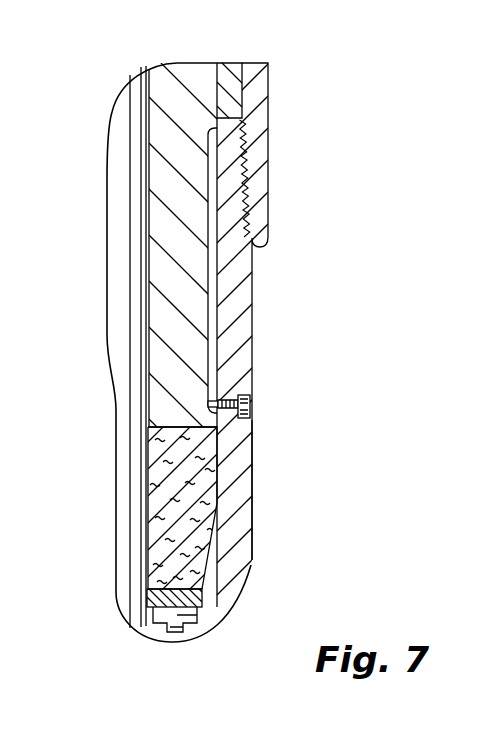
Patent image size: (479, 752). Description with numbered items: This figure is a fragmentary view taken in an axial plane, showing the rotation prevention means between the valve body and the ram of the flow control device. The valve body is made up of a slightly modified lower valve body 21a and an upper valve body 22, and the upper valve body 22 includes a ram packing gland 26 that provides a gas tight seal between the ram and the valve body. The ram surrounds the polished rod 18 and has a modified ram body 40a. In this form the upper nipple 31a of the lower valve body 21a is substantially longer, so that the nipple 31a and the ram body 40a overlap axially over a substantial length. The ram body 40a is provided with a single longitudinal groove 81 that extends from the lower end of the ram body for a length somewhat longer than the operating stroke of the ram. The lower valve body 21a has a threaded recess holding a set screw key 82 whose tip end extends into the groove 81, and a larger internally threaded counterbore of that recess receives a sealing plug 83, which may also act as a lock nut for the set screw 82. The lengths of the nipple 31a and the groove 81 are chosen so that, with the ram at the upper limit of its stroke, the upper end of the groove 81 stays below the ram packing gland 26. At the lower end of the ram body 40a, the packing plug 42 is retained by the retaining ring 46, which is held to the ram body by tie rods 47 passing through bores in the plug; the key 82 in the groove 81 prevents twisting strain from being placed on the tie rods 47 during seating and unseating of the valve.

The polished rod 18 is at (119, 268).
The ram body 40a is at (188, 72).
The ram packing gland 26 is at (238, 52).
The upper valve body 22 is at (278, 90).
The upper nipple 31a is at (243, 277).
The longitudinal groove 81 is at (212, 343).
The set screw key 82 is at (224, 402).
The sealing plug 83 is at (250, 404).
The lower valve body 21a is at (262, 461).
The packing plug 42 is at (206, 510).
The retaining ring 46 is at (203, 604).
The tie rods 47 is at (171, 631).